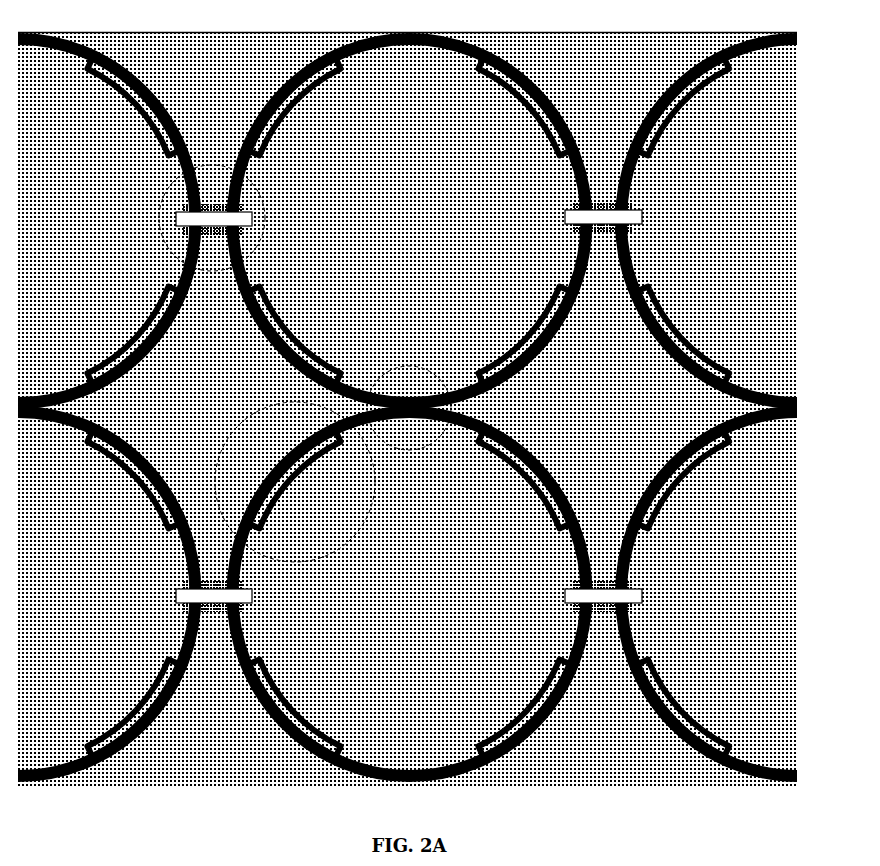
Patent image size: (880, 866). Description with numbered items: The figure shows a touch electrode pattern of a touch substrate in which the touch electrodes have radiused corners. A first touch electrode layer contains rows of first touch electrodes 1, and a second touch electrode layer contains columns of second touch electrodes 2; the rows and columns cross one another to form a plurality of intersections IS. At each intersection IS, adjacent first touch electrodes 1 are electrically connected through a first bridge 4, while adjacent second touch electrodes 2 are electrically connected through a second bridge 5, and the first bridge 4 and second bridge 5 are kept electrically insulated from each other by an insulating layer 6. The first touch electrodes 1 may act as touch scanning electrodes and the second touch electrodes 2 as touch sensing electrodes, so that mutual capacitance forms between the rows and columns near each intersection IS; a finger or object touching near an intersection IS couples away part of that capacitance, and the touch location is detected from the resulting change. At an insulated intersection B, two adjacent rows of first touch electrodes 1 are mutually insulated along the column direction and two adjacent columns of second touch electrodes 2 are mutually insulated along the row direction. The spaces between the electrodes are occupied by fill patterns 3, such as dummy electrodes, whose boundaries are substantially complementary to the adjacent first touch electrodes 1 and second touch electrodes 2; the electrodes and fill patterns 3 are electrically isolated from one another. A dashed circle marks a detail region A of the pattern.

The first touch electrode 1 is at (410, 221).
The second touch electrode 2 is at (114, 578).
The fill pattern 3 is at (525, 92).
The first bridge 4 is at (233, 222).
The second bridge 5 is at (222, 180).
The insulating layer 6 is at (238, 215).
The intersection IS is at (160, 218).
The detail region A is at (295, 505).
The insulated intersection B is at (412, 429).